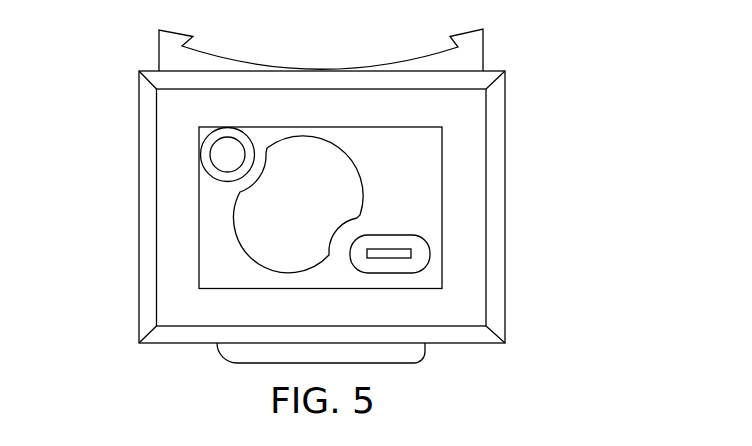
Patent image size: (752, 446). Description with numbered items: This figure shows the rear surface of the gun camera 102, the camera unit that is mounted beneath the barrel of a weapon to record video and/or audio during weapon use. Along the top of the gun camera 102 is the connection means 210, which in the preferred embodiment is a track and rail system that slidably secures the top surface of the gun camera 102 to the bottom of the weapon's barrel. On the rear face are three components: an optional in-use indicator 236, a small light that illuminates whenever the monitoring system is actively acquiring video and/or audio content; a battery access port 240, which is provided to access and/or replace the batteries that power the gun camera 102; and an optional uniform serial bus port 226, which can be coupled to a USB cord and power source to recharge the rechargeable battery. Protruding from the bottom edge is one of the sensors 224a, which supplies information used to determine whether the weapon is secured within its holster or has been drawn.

The gun camera 102 is at (575, 208).
The connection means 210 is at (477, 46).
The sensor 224a is at (247, 353).
The uniform serial bus port 226 is at (402, 238).
The in-use indicator 236 is at (220, 156).
The battery access port 240 is at (334, 170).